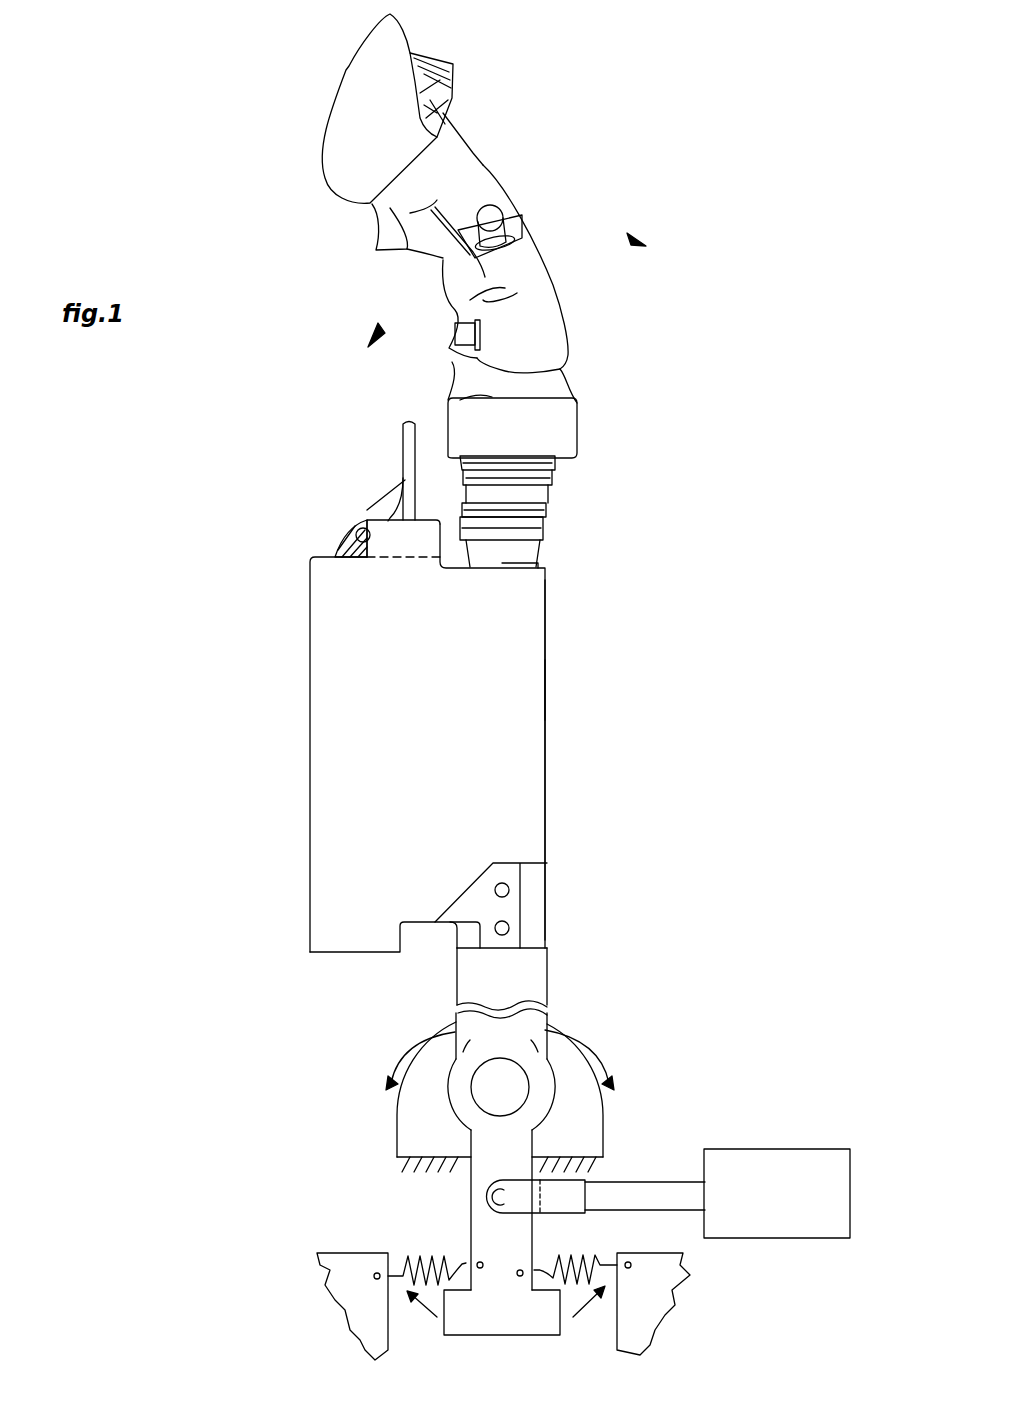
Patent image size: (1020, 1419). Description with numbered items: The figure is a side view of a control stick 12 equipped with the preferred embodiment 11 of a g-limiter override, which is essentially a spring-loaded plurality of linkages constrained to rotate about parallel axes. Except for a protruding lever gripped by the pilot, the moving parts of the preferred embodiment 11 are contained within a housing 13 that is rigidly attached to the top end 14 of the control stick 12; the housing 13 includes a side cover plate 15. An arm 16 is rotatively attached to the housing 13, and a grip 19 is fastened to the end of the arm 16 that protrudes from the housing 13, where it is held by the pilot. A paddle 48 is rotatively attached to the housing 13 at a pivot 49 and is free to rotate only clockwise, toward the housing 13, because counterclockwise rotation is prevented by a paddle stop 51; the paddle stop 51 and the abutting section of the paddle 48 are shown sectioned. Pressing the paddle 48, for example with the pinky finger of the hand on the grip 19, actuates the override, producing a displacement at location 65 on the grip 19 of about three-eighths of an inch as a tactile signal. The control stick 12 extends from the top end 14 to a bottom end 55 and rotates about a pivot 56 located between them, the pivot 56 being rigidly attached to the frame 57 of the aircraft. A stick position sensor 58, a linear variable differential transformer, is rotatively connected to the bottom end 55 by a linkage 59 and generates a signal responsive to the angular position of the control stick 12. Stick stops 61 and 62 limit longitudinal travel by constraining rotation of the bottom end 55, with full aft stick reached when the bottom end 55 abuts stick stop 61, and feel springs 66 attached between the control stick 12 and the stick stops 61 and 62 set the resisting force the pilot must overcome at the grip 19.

The preferred embodiment 11 is at (568, 692).
The control stick 12 is at (514, 1158).
The housing 13 is at (556, 625).
The top end 14 is at (548, 864).
The side cover plate 15 is at (315, 693).
The arm 16 is at (545, 536).
The grip 19 is at (449, 236).
The paddle 48 is at (403, 420).
The pivot 49 is at (360, 528).
The paddle stop 51 is at (340, 553).
The bottom end 55 is at (516, 1332).
The pivot 56 is at (513, 1098).
The frame 57 is at (595, 1130).
The stick position sensor 58 is at (780, 1154).
The linkage 59 is at (650, 1203).
The stick stop 61 is at (335, 1293).
The stick stop 62 is at (657, 1287).
The location 65 is at (440, 258).
The feel springs 66 is at (422, 1262).